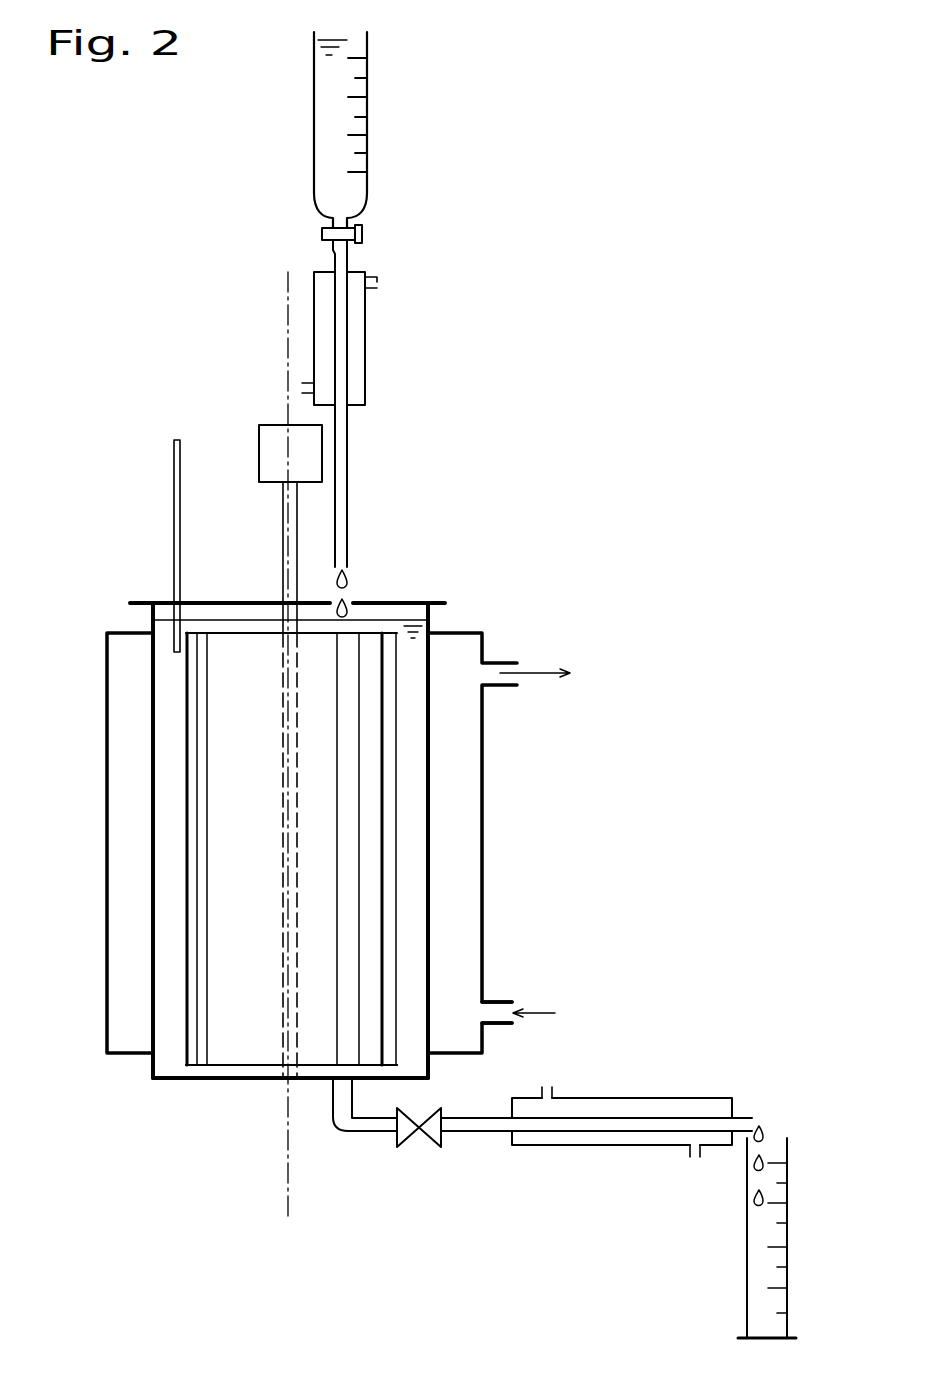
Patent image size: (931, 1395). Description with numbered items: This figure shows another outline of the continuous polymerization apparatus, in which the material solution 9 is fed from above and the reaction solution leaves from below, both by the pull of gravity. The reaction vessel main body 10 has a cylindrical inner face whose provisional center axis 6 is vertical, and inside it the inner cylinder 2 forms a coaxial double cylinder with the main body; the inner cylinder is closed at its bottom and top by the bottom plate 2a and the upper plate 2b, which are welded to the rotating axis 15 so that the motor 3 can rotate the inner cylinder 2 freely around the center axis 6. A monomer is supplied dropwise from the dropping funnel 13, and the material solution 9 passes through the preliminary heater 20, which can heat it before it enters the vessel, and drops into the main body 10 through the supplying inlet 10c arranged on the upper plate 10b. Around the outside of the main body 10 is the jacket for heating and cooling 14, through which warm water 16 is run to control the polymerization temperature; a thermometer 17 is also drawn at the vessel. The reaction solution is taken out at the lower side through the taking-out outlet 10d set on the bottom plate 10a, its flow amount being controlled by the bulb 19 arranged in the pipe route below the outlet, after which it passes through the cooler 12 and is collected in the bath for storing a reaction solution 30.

The inner cylinder 2 is at (410, 930).
The bottom plate 2a is at (215, 1080).
The upper plate 2b is at (226, 633).
The motor 3 is at (259, 443).
The center axis 6 is at (288, 298).
The material solution for polymerization 9 is at (322, 133).
The reaction vessel main body 10 is at (420, 895).
The bottom plate 10a is at (255, 1080).
The upper plate 10b is at (310, 600).
The supplying inlet 10c is at (350, 597).
The taking-out outlet 10d is at (340, 1085).
The cooler 12 is at (607, 1098).
The dropping funnel 13 is at (367, 70).
The jacket for heating and cooling 14 is at (485, 800).
The rotating axis 15 is at (282, 553).
The warm water 16 is at (542, 1018).
The thermometer 17 is at (174, 470).
The bulb 19 is at (408, 1142).
The preliminary heater 20 is at (367, 312).
The bath for storing a reaction solution 30 is at (787, 1190).